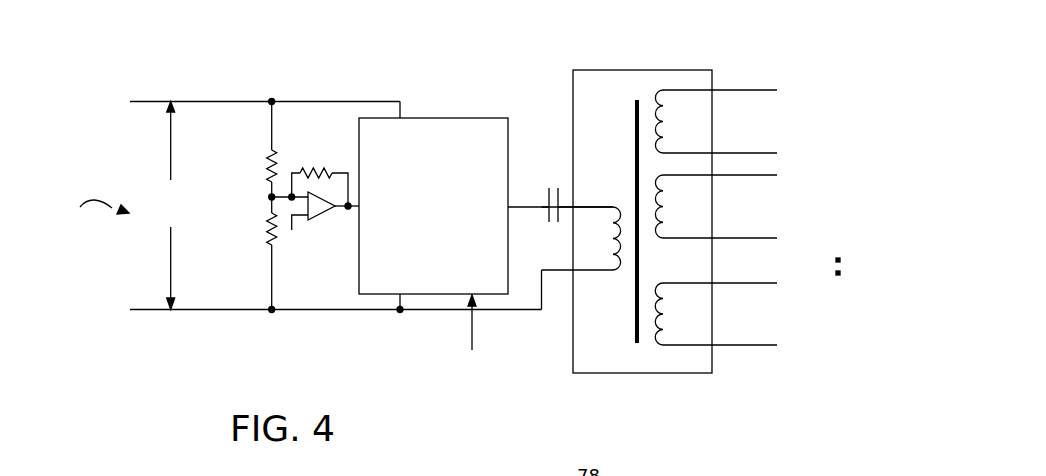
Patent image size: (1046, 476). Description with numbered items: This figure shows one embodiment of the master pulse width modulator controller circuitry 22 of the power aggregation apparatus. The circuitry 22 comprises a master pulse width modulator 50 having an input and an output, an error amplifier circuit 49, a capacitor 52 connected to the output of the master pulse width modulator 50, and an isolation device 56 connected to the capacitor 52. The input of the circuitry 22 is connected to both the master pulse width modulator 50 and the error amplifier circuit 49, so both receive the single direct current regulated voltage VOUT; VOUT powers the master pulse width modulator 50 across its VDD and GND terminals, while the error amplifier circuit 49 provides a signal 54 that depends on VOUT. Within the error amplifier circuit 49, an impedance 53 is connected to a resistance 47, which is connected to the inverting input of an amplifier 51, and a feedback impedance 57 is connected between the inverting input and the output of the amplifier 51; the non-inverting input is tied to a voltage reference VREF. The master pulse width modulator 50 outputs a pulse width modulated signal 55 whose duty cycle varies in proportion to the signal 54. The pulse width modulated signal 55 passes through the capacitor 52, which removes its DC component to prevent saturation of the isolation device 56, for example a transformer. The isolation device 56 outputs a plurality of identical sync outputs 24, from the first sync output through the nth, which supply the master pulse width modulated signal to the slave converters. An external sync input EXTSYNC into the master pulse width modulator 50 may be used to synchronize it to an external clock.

The master pulse width modulator controller circuitry 22 is at (138, 366).
The sync outputs 24 is at (772, 68).
The resistance 47 is at (266, 228).
The error amplifier circuit 49 is at (234, 267).
The master pulse width modulator 50 is at (452, 118).
The amplifier 51 is at (322, 216).
The capacitor 52 is at (553, 174).
The impedance 53 is at (266, 165).
The signal 54 is at (348, 173).
The pulse width modulated signal 55 is at (520, 208).
The isolation device 56 is at (627, 70).
The feedback impedance 57 is at (309, 168).